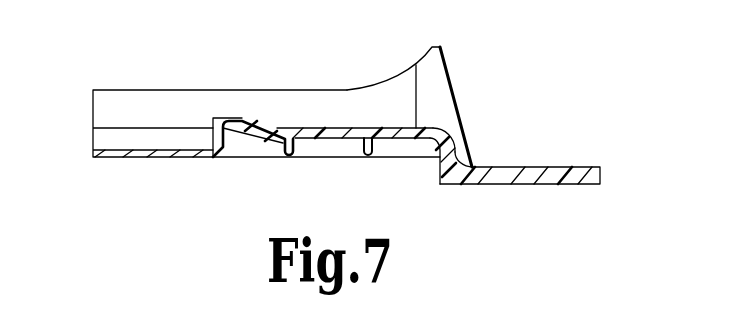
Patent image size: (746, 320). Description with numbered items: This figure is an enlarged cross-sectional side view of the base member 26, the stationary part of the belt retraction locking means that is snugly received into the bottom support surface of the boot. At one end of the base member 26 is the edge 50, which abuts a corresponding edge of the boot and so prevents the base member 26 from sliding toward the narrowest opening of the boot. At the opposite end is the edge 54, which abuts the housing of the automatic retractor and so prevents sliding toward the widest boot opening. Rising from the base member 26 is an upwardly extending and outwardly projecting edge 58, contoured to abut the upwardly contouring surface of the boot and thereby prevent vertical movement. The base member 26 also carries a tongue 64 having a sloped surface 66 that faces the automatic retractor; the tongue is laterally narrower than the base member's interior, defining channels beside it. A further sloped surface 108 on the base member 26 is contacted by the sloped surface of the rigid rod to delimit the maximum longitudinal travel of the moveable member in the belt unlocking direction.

The base member 26 is at (313, 77).
The upwardly extending and outwardly projecting edge 58 is at (395, 77).
The tongue 64 is at (223, 120).
The sloped surface 66 is at (263, 122).
The sloped surface 108 is at (461, 152).
The edge 50 is at (440, 176).
The edge 54 is at (600, 179).